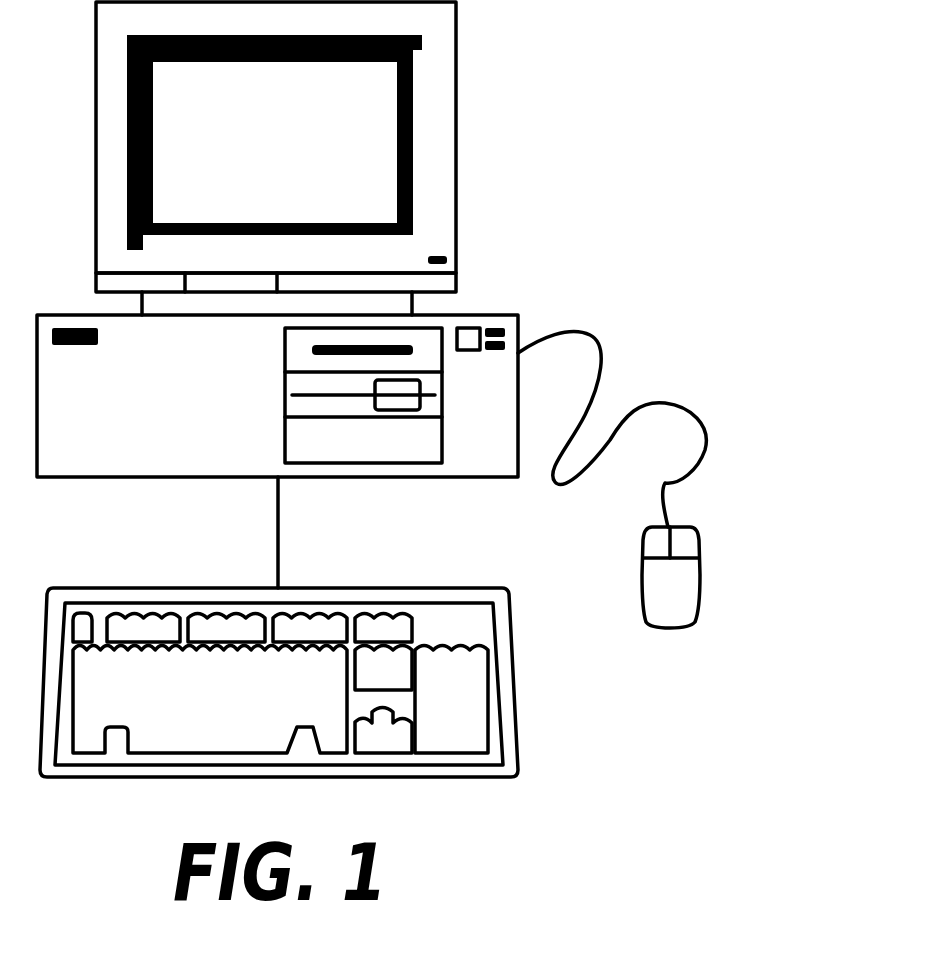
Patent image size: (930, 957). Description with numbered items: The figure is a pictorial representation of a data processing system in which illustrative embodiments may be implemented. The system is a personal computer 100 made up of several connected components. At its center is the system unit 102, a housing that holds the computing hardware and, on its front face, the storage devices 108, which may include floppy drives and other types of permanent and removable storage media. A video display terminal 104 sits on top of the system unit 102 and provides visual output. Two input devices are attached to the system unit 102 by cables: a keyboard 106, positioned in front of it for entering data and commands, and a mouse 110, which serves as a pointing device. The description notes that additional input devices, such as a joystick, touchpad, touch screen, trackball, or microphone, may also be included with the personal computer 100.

The computer 100 is at (561, 227).
The system unit 102 is at (277, 426).
The video display terminal 104 is at (456, 138).
The keyboard 106 is at (518, 722).
The storage devices 108 is at (280, 405).
The mouse 110 is at (700, 565).